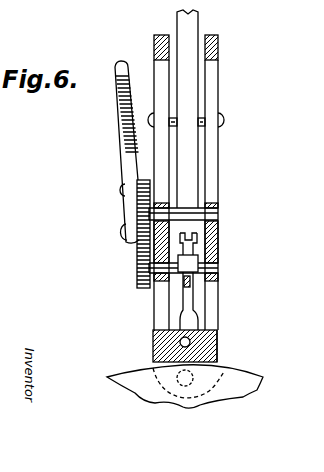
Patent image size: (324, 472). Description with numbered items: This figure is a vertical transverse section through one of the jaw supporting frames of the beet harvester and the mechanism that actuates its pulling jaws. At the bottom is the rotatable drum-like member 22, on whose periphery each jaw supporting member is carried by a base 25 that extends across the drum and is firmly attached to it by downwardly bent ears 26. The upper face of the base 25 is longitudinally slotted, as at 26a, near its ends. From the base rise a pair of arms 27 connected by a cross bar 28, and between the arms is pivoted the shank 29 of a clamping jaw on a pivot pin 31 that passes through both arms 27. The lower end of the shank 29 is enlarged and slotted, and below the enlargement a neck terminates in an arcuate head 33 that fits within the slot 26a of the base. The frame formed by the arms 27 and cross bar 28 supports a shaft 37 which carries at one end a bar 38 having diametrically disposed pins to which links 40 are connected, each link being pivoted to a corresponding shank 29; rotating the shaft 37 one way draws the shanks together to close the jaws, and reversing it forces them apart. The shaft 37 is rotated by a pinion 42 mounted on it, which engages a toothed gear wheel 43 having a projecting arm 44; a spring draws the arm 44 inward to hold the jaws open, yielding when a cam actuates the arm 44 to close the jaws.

The drum-like member 22 is at (245, 380).
The base 25 is at (216, 349).
The ears 26 is at (224, 392).
The slot 26a is at (214, 333).
The arms 27 is at (160, 153).
The cross bar 28 is at (155, 47).
The shank 29 is at (188, 94).
The pivot pin 31 is at (223, 118).
The arcuate head 33 is at (155, 345).
The shaft 37 is at (219, 267).
The bar 38 is at (199, 282).
The links 40 is at (183, 281).
The pinion 42 is at (138, 266).
The toothed gear wheel 43 is at (138, 213).
The arm 44 is at (123, 128).